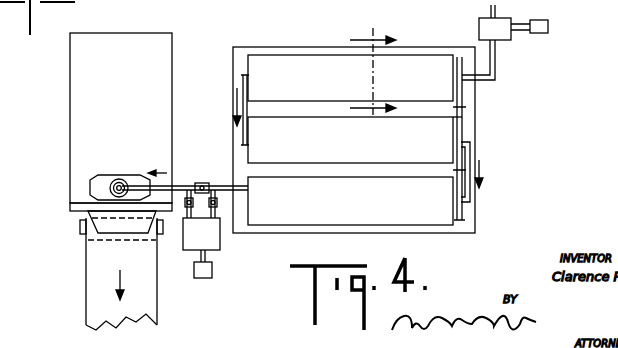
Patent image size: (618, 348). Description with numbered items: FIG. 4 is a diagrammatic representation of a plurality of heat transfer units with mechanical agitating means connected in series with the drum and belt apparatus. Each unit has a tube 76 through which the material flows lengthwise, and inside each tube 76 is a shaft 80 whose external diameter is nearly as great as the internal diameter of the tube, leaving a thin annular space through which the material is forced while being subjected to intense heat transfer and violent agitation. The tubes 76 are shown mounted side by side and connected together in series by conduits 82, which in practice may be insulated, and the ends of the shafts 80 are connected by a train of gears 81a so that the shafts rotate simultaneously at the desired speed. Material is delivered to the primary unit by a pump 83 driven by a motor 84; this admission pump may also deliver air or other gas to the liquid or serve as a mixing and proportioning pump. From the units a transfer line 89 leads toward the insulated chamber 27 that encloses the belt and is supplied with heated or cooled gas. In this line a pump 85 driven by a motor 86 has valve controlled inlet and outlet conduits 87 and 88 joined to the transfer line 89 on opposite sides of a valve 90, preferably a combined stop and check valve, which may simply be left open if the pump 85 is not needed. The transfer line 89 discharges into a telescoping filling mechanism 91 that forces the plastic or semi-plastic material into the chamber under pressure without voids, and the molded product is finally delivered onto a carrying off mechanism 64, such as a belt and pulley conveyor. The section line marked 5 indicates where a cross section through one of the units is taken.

The insulated chamber 27 is at (82, 132).
The telescoping filling mechanism 91 is at (122, 176).
The transfer line 89 is at (139, 175).
The valve 90 is at (201, 182).
The outlet conduit 88 is at (187, 186).
The inlet conduit 87 is at (215, 186).
The pump 85 is at (215, 243).
The motor 86 is at (204, 279).
The carrying off mechanism 64 is at (96, 310).
The tube 76 is at (350, 140).
The shaft 80 is at (453, 77).
The conduits 82 is at (243, 78).
The train of gears 81a is at (456, 123).
The section line 5 is at (373, 74).
The pump 83 is at (509, 41).
The motor 84 is at (548, 27).